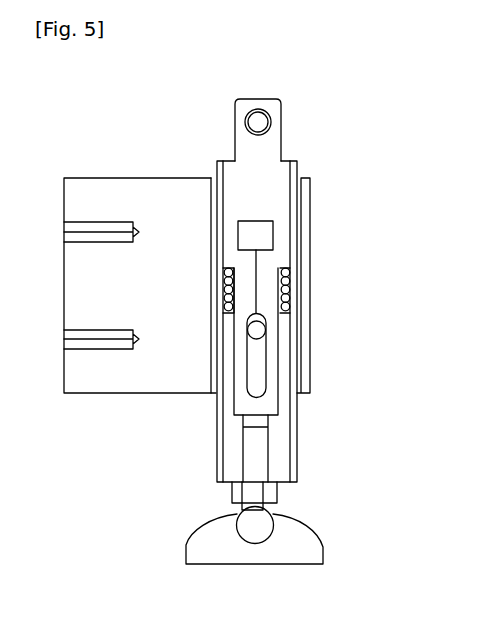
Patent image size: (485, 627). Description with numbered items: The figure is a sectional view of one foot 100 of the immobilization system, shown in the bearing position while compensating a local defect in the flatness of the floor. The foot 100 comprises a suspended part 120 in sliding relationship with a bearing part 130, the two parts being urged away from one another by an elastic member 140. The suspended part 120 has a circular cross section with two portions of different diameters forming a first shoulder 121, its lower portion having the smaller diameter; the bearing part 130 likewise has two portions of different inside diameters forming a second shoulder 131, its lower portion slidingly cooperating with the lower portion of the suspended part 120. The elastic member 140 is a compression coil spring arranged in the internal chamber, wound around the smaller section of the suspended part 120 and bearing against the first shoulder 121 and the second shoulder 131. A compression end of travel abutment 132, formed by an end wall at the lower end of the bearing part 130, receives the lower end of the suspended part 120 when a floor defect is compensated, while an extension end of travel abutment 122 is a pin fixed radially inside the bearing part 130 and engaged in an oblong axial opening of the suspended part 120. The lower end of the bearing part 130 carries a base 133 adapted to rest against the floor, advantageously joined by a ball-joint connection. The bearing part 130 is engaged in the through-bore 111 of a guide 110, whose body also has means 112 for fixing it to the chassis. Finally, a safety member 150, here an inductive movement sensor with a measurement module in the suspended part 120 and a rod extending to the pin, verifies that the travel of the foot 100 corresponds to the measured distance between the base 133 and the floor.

The foot 100 is at (330, 437).
The guide 110 is at (128, 381).
The through-bore 111 is at (214, 199).
The means for fixing 112 is at (101, 222).
The suspended part 120 is at (272, 143).
The first shoulder 121 is at (283, 268).
The extension end of travel abutment 122 is at (265, 334).
The bearing part 130 is at (290, 465).
The second shoulder 131 is at (288, 319).
The compression end of travel abutment 132 is at (240, 418).
The base 133 is at (302, 546).
The elastic member 140 is at (283, 284).
The safety member 150 is at (275, 220).